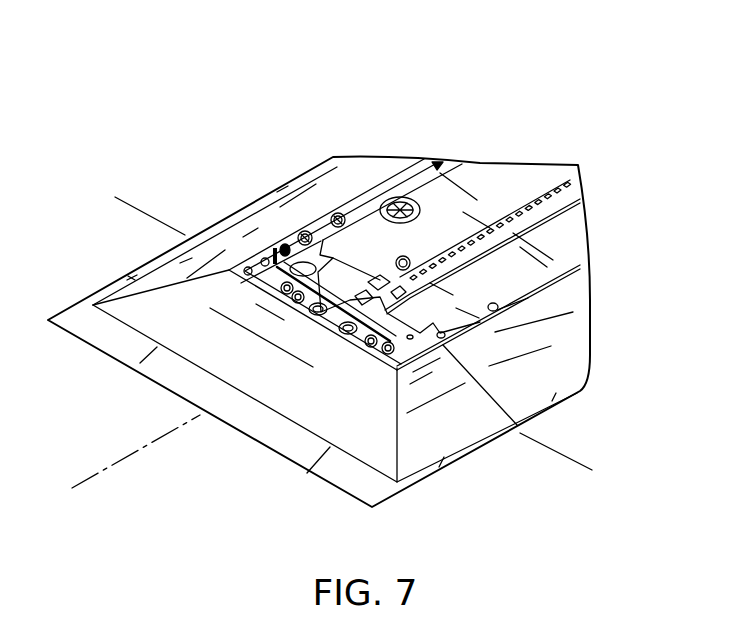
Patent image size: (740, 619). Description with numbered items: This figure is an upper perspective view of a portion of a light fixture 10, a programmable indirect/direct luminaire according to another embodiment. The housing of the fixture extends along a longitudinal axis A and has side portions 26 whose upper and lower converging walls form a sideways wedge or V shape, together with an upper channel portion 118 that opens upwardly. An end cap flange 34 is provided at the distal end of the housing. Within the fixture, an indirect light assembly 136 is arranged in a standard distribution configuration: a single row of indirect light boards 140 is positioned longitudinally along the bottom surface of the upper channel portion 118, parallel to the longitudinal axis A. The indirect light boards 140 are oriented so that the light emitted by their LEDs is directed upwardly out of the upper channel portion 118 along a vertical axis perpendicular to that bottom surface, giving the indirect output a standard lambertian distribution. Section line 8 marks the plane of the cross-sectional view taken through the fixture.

The light fixture 10 is at (133, 70).
The side portions 26 is at (335, 175).
The end cap flange 34 is at (262, 428).
The upper channel portion 118 is at (557, 240).
The indirect light assembly 136 is at (501, 186).
The indirect light boards 140 is at (555, 194).
The section line 8- 8 is at (166, 187).
The longitudinal axis A is at (88, 478).